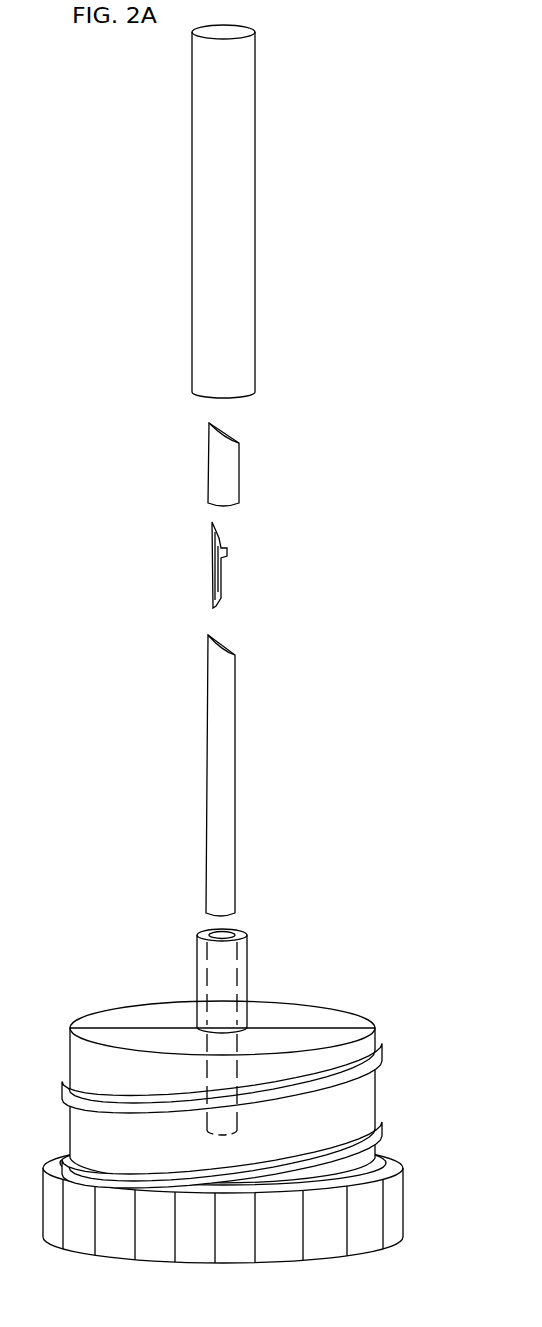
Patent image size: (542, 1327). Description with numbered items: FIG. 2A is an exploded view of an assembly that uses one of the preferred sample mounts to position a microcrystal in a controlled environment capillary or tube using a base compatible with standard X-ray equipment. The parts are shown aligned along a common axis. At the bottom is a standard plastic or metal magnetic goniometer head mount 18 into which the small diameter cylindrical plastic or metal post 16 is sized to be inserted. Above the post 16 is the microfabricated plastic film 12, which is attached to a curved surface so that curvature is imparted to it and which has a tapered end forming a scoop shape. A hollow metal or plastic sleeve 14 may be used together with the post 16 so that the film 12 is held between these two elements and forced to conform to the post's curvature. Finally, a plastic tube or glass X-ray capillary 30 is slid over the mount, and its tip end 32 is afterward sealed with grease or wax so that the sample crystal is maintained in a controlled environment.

The X-ray capillary 30 is at (273, 209).
The tip end 32 is at (270, 32).
The hollow sleeve 14 is at (245, 468).
The microfabricated plastic film 12 is at (237, 565).
The post 16 is at (242, 793).
The magnetic goniometer head mount 18 is at (73, 1008).